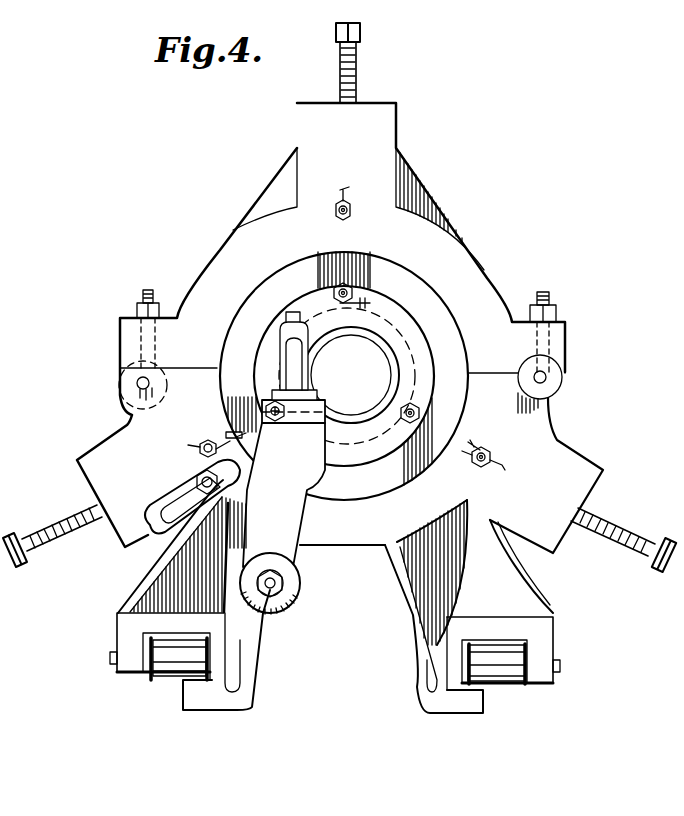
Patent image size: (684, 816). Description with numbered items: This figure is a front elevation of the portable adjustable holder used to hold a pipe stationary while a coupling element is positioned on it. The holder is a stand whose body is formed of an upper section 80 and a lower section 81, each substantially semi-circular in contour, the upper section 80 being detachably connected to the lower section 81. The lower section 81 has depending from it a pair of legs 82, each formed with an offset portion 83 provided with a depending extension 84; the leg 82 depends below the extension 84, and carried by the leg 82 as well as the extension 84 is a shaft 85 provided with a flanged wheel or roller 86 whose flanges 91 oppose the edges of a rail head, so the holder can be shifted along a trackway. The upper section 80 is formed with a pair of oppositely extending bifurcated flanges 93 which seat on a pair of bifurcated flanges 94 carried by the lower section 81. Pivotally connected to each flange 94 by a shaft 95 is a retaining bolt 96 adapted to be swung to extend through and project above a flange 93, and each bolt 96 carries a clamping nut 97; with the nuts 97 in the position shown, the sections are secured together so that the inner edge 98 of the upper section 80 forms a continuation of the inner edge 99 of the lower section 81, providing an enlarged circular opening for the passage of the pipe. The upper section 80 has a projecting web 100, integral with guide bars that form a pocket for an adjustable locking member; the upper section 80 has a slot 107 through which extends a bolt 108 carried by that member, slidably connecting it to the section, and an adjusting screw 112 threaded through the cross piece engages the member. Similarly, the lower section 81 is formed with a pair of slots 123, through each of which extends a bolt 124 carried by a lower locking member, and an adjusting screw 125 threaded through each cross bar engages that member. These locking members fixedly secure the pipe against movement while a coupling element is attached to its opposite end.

The upper section 80 is at (476, 282).
The lower section 81 is at (342, 394).
The legs 82 is at (254, 662).
The offset portion 83 is at (205, 612).
The depending extension 84 is at (122, 630).
The shaft 85 is at (113, 663).
The flanged wheel or roller 86 is at (175, 666).
The flanges 91 is at (160, 632).
The bifurcated flanges 93 is at (122, 342).
The bifurcated flanges 94 is at (562, 377).
The shaft 95 is at (148, 378).
The retaining bolt 96 is at (149, 291).
The clamping nut 97 is at (135, 310).
The inner edge 98 is at (431, 274).
The inner edge 99 is at (400, 476).
The web 100 is at (270, 200).
The slot 107 is at (344, 194).
The bolt 108 is at (352, 214).
The adjusting screw 112 is at (358, 76).
The slots 123 is at (196, 450).
The bolt 124 is at (184, 430).
The adjusting screw 125 is at (50, 526).